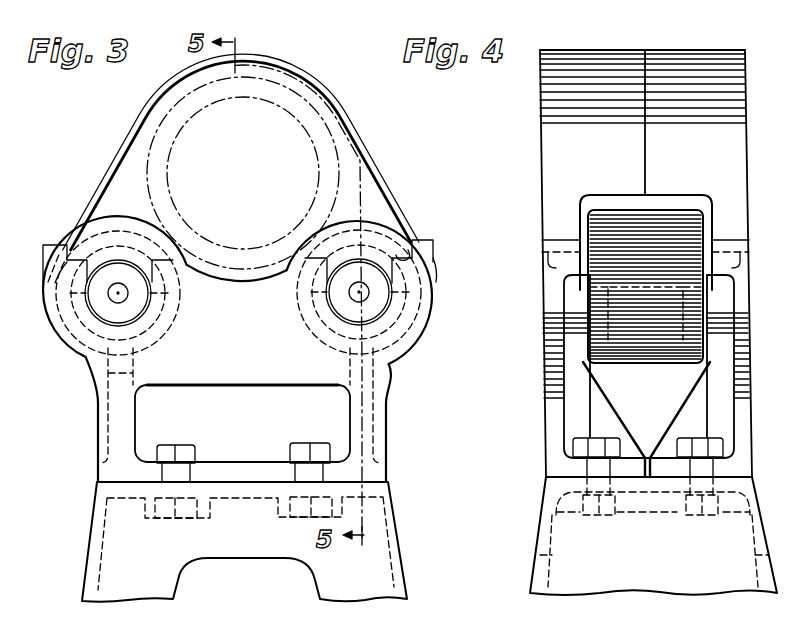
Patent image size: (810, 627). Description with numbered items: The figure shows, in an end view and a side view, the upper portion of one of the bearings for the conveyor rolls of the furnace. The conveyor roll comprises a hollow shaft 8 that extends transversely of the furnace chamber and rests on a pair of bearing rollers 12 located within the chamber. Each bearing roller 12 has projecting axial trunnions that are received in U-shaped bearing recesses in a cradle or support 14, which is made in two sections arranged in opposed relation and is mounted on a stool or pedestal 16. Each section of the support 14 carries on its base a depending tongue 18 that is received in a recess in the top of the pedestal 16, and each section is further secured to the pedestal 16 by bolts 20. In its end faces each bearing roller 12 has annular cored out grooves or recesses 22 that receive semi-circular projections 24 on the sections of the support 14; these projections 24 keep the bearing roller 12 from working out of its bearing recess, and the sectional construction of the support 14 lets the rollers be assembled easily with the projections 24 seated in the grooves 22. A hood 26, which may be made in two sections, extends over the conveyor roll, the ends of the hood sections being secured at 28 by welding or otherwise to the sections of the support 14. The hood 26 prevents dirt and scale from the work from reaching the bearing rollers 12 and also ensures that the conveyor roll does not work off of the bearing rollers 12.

In FIG. 3, the hollow shaft 8 is at (243, 98).
In FIG. 3, the bearing roller 12 is at (117, 214).
In FIG. 4, the bearing roller 12 is at (660, 212).
In FIG. 3, the cradle or support 14 is at (102, 408).
In FIG. 4, the cradle or support 14 is at (553, 408).
In FIG. 3, the stool or pedestal 16 is at (92, 560).
In FIG. 4, the stool or pedestal 16 is at (540, 525).
In FIG. 3, the depending tongue 18 is at (235, 500).
In FIG. 4, the depending tongue 18 is at (687, 515).
In FIG. 3, the bolts 20 is at (292, 443).
In FIG. 4, the bolts 20 is at (690, 437).
In FIG. 3, the annular cored out groove or recess 22 is at (80, 248).
In FIG. 3, the semi-circular projection 24 is at (68, 333).
In FIG. 4, the semi-circular projection 24 is at (683, 287).
In FIG. 3, the hood 26 is at (133, 125).
In FIG. 4, the hood 26 is at (675, 50).
In FIG. 3, the securing point 28 is at (58, 280).
In FIG. 4, the securing point 28 is at (545, 262).